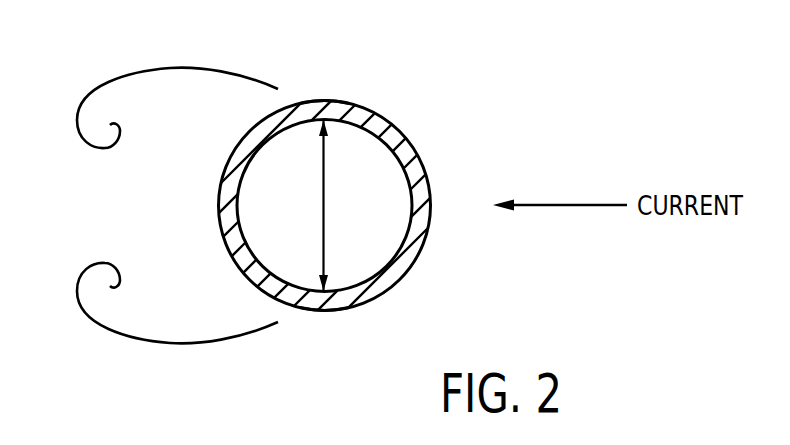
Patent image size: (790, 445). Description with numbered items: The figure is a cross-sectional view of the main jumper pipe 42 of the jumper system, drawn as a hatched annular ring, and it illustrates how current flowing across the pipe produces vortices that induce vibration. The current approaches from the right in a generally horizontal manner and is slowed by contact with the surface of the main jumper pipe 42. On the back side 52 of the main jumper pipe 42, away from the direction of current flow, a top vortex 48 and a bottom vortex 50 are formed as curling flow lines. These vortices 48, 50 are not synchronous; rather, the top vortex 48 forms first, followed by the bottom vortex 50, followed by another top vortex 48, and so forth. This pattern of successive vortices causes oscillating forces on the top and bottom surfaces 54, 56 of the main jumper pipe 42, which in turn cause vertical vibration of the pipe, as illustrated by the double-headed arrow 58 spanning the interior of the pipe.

The main jumper pipe 42 is at (403, 130).
The top vortex 48 is at (170, 68).
The bottom vortex 50 is at (168, 343).
The back side 52 is at (92, 194).
The top surface 54 is at (324, 100).
The bottom surface 56 is at (322, 310).
The arrow 58 is at (324, 205).